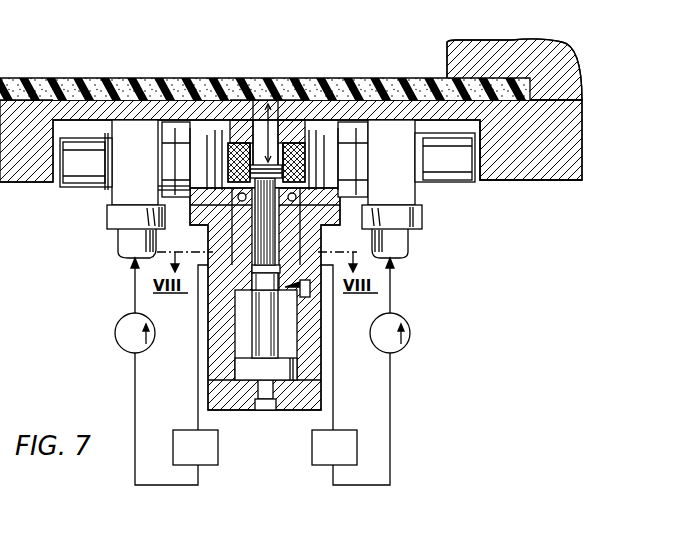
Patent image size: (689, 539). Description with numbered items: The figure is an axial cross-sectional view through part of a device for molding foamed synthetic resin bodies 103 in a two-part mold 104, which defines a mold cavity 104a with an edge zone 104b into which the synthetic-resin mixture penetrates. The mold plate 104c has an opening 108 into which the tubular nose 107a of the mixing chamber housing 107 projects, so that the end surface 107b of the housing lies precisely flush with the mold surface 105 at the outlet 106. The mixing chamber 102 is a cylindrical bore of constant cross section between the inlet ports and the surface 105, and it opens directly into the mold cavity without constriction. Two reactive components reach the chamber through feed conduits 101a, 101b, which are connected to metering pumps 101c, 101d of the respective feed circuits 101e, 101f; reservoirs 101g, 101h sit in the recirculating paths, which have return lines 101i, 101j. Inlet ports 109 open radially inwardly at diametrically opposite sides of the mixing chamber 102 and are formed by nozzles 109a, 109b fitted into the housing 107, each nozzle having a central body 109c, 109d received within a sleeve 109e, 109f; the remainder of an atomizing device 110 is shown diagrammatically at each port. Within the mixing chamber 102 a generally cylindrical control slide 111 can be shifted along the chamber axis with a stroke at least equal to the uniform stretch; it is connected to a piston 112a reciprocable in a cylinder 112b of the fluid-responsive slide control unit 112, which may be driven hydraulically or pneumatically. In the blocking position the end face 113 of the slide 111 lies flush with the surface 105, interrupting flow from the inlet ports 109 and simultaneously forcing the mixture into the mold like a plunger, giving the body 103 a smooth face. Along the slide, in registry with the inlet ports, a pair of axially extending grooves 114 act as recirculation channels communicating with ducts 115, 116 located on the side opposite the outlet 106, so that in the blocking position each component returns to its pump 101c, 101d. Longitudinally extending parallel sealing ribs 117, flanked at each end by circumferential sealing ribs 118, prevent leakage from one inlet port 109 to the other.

The mixing chamber 102 is at (263, 100).
The foamed synthetic resin body 103 is at (72, 100).
The two-part mold 104 is at (311, 93).
The mold cavity 104a is at (265, 52).
The edge zone 104b is at (497, 78).
The mold plate 104c is at (582, 144).
The mold surface 105 is at (133, 100).
The outlet 106 is at (258, 88).
The mixing chamber housing 107 is at (203, 120).
The tubular nose 107a is at (246, 120).
The end surface 107b is at (281, 100).
The opening 108 is at (289, 100).
The inlet ports 109 is at (222, 152).
The nozzle 109a is at (236, 140).
The nozzle 109b is at (302, 140).
The central body 109c is at (228, 167).
The central body 109d is at (306, 166).
The sleeve 109e is at (236, 143).
The sleeve 109f is at (296, 143).
The atomizing device 110 is at (416, 266).
The control slide 111 is at (250, 262).
The fluid-responsive slide control unit 112 is at (287, 414).
The piston 112a is at (296, 372).
The cylinder 112b is at (242, 345).
The end face 113 is at (304, 170).
The axially extending grooves 114 is at (277, 246).
The duct 115 is at (160, 186).
The duct 116 is at (126, 199).
The longitudinally extending sealing ribs 117 is at (271, 229).
The circumferential sealing ribs 118 is at (265, 277).
The feed conduit 101a is at (118, 239).
The feed conduit 101b is at (409, 244).
The metering pump 101c is at (117, 338).
The metering pump 101d is at (409, 336).
The feed circuit 101e is at (134, 289).
The feed circuit 101f is at (391, 297).
The reservoir 101g is at (212, 466).
The reservoir 101h is at (322, 466).
The return line 101i is at (196, 401).
The return line 101j is at (334, 406).